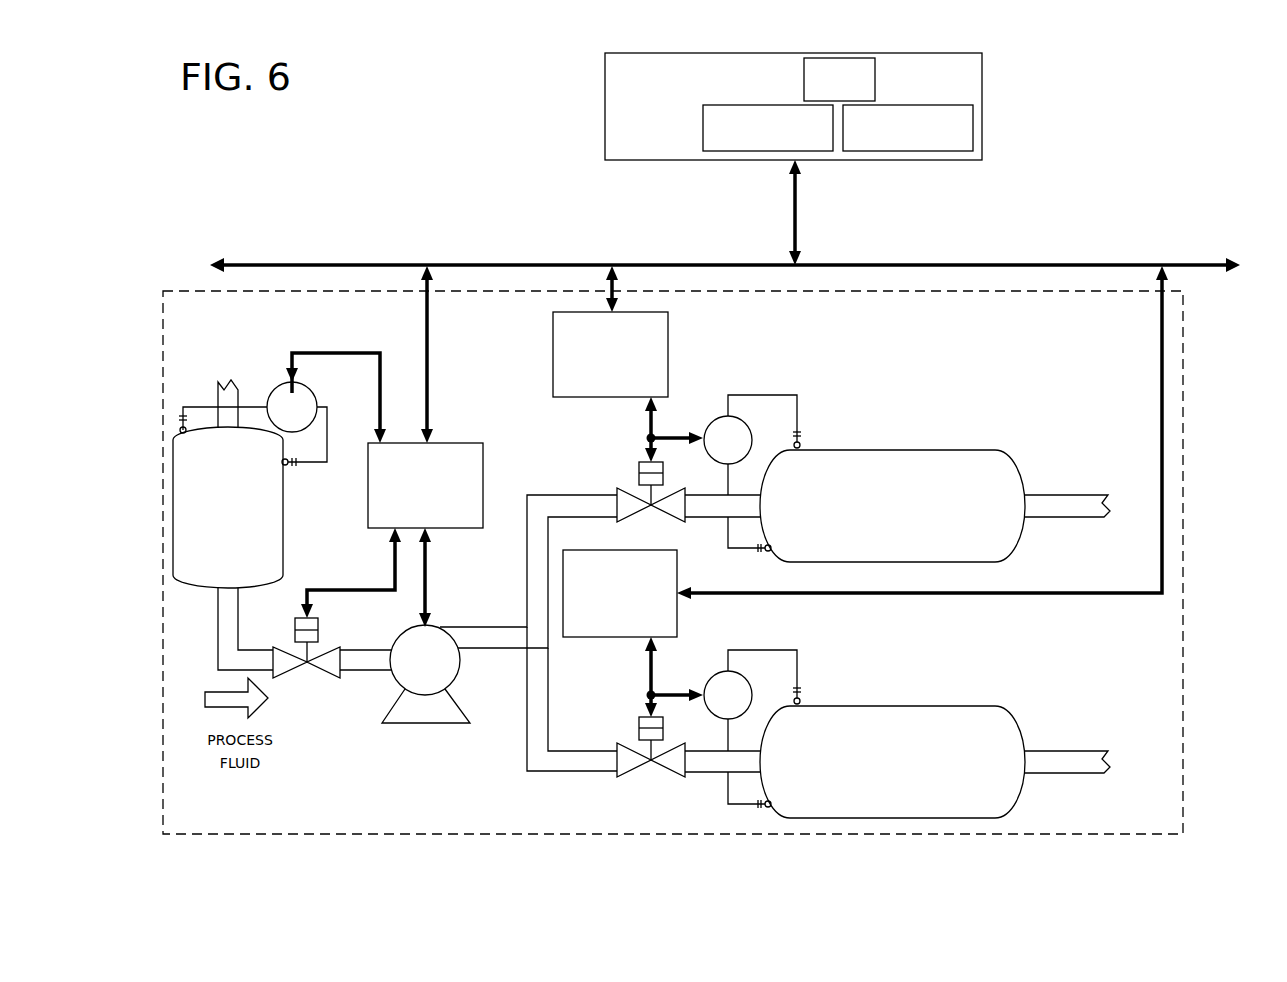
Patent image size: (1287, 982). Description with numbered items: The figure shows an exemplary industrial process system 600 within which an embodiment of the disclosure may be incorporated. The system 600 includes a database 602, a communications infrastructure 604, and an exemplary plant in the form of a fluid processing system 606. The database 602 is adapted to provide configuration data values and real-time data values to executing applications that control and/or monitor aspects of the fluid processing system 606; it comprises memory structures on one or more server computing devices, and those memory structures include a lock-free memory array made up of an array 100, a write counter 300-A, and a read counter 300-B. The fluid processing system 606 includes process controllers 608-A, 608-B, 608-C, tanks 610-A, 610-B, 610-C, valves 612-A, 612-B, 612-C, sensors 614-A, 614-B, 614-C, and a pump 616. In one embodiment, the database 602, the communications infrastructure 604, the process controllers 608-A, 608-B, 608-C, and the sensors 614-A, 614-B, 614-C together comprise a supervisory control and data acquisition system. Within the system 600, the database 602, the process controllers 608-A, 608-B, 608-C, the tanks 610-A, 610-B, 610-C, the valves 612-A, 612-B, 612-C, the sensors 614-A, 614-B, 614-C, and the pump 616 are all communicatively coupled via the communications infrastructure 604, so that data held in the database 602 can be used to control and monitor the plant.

The system 600 is at (492, 92).
The database 602 is at (793, 106).
The array 100 is at (839, 79).
The write counter 300-A is at (768, 128).
The read counter 300-B is at (908, 128).
The communications infrastructure 604 is at (291, 262).
The fluid processing system 606 is at (1185, 364).
The process controller 608-A is at (484, 452).
The process controller 608-B is at (669, 342).
The process controller 608-C is at (602, 638).
The tank 610-A is at (284, 528).
The tank 610-B is at (910, 450).
The tank 610-C is at (913, 706).
The valve 612-A is at (319, 636).
The valve 612-B is at (639, 474).
The valve 612-C is at (639, 731).
The sensor 614-A is at (275, 392).
The sensor 614-B is at (708, 421).
The sensor 614-C is at (710, 676).
The pump 616 is at (423, 724).